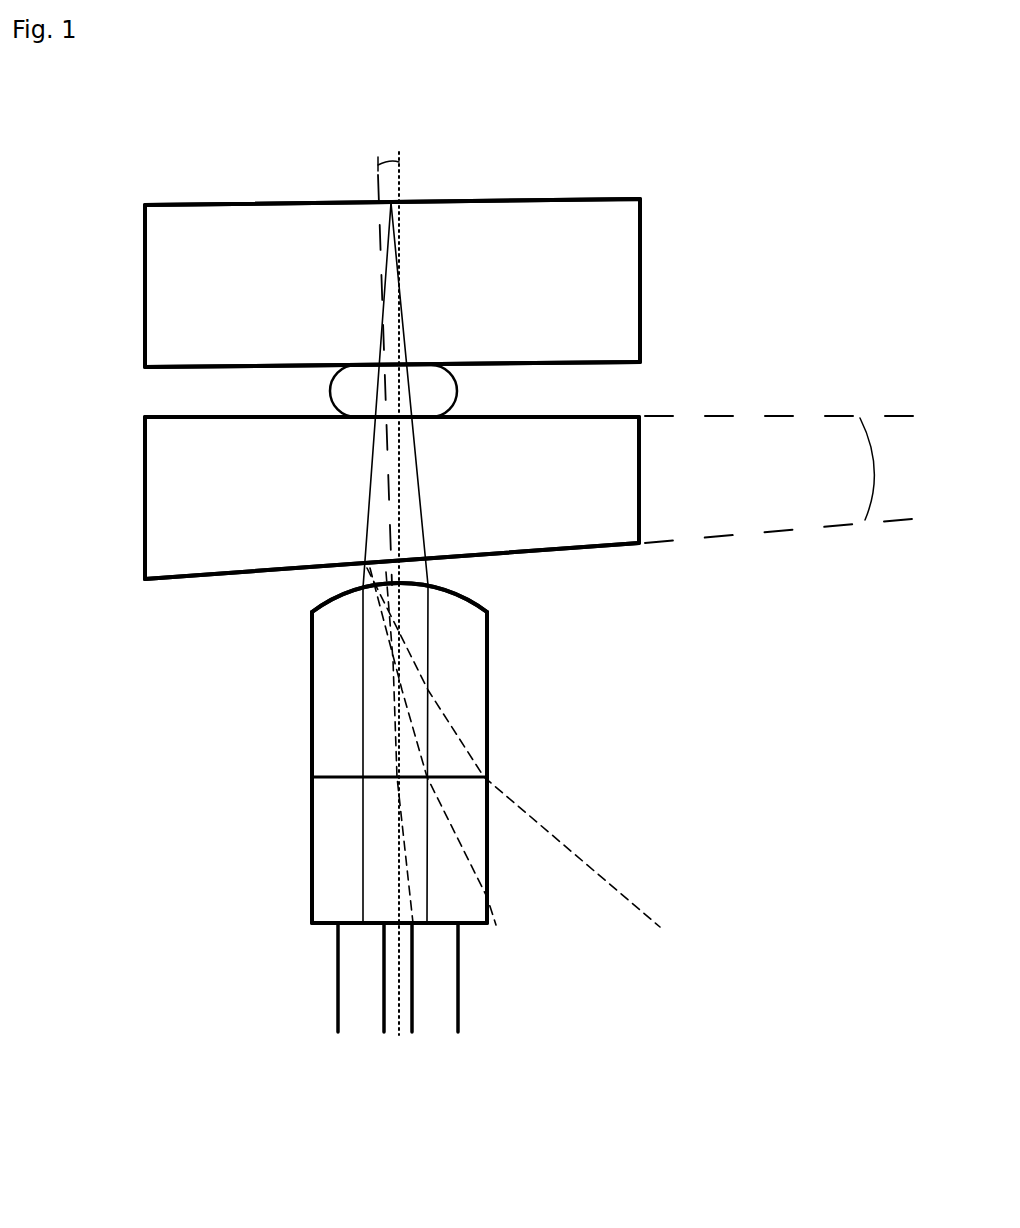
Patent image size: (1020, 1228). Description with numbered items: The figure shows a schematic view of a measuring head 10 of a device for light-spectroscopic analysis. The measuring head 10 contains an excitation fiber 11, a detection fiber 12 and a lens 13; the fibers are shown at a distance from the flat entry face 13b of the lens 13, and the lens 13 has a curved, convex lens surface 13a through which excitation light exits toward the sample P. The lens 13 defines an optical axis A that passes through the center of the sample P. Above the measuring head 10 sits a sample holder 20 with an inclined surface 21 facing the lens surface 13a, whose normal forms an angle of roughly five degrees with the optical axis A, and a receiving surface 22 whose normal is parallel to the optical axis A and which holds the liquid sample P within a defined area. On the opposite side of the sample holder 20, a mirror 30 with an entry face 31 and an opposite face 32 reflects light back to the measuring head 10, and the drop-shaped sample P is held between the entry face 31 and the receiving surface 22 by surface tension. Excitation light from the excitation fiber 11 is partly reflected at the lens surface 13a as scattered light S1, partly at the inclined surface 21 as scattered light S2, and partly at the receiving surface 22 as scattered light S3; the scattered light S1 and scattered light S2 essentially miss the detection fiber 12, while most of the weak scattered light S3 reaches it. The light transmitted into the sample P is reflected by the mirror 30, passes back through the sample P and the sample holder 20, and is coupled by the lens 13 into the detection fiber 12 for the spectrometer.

The measuring head 10 is at (482, 688).
The excitation fiber 11 is at (352, 960).
The detection fiber 12 is at (435, 952).
The lens 13 is at (328, 682).
The lens surface 13a is at (440, 588).
The flat entry face 13b is at (335, 780).
The sample holder 20 is at (605, 484).
The inclined surface 21 is at (172, 576).
The receiving surface 22 is at (185, 410).
The mirror 30 is at (606, 313).
The entry face 31 is at (613, 363).
The upper surface of second plate 32 is at (557, 199).
The sample P is at (343, 386).
The optical axis A is at (395, 228).
The scattered light S1 is at (620, 897).
The scattered light S2 is at (460, 850).
The scattered light S3 is at (405, 878).